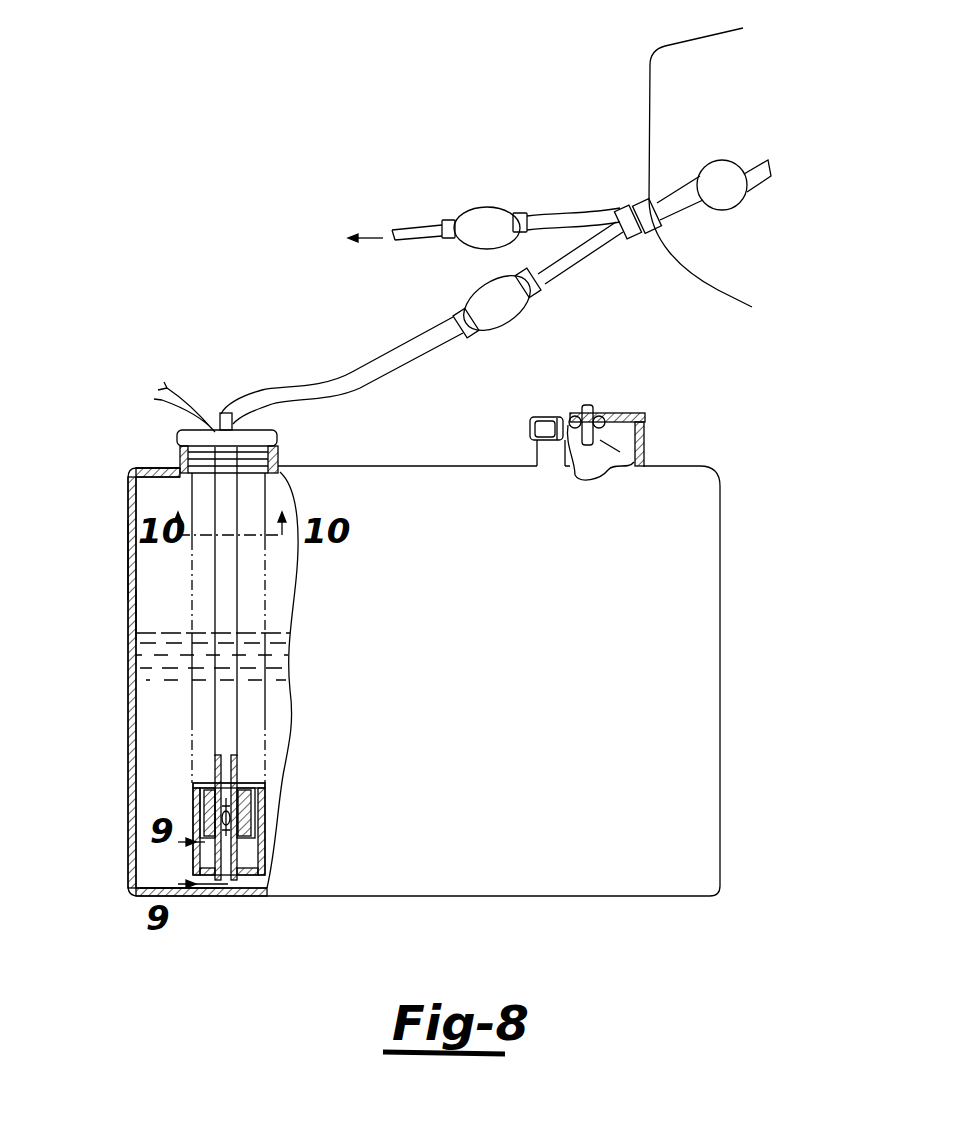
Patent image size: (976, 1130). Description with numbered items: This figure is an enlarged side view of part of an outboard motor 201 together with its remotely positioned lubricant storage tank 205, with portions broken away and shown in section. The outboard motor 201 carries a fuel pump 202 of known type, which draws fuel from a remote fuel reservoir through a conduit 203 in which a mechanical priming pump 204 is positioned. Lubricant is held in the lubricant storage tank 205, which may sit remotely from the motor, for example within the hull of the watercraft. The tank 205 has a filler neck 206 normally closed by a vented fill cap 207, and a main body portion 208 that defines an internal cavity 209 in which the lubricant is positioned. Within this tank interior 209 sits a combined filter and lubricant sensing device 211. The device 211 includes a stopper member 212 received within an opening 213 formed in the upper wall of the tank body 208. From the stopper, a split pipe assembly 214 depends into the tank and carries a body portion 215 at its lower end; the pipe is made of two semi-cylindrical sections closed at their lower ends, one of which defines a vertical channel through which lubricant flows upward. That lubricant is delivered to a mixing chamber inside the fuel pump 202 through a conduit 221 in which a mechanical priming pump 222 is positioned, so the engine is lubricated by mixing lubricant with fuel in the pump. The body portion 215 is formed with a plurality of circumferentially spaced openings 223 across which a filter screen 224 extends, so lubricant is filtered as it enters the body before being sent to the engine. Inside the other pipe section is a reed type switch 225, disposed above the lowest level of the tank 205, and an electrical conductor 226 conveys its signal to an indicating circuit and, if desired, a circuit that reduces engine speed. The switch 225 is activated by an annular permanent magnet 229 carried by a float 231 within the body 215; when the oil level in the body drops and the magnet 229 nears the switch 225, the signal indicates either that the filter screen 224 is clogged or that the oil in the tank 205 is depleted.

The outboard motor 201 is at (634, 76).
The fuel pump 202 is at (716, 170).
The conduit 203 is at (424, 228).
The mechanical priming pump 204 is at (487, 215).
The lubricant storage tank 205 is at (418, 490).
The filler neck 206 is at (617, 450).
The vented fill cap 207 is at (620, 407).
The main body portion 208 is at (127, 557).
The internal cavity 209 is at (150, 611).
The combined filter and lubricant sensing device 211 is at (227, 672).
The stopper member 212 is at (180, 436).
The opening 213 is at (147, 482).
The split pipe assembly 214 is at (233, 705).
The body portion 215 is at (267, 821).
The conduit 221 is at (373, 357).
The mechanical priming pump 222 is at (500, 312).
The openings 223 is at (195, 855).
The filter screen 224 is at (193, 810).
The reed type switch 225 is at (267, 853).
The electrical conductor 226 is at (197, 405).
The annular permanent magnet 229 is at (252, 793).
The float 231 is at (268, 833).